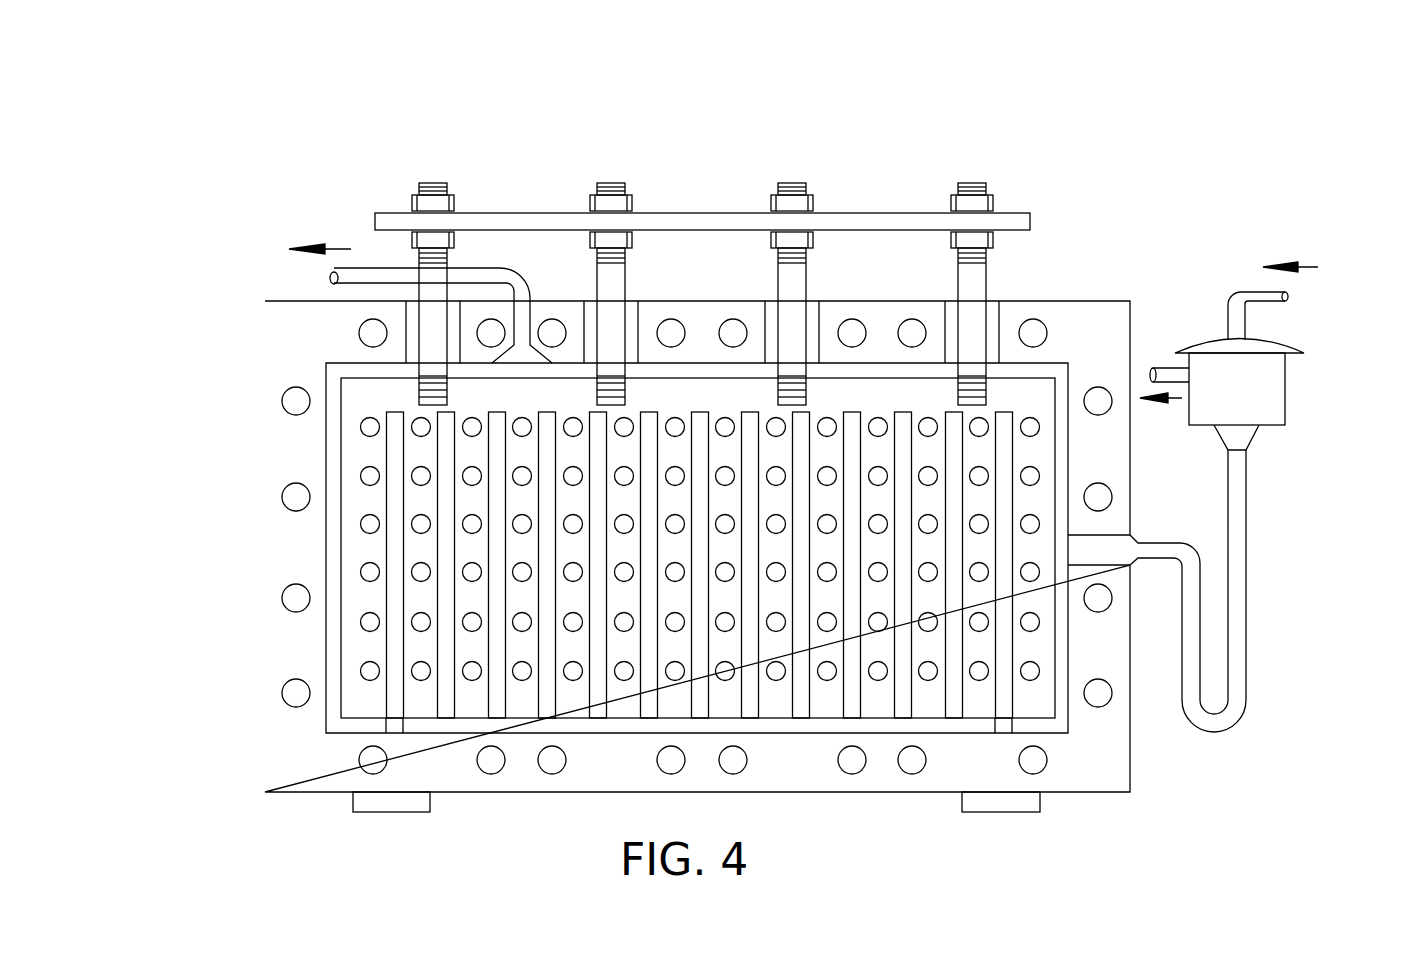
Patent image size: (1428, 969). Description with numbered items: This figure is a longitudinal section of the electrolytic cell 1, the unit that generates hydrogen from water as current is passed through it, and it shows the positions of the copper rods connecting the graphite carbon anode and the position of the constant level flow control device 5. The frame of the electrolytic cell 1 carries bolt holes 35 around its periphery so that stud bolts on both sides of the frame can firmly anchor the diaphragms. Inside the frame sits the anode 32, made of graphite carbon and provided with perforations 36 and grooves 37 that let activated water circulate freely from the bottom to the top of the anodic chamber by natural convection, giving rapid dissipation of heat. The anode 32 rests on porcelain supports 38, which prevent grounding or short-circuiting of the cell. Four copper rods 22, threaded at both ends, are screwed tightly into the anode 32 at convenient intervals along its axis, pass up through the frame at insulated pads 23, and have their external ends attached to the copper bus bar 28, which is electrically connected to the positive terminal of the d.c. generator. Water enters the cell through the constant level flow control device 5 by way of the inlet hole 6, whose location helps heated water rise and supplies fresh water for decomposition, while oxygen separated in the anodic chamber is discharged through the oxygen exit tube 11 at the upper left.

The electrolytic cell 1 is at (291, 343).
The constant level flow control device 5 is at (1285, 388).
The inlet hole 6 is at (1247, 498).
The oxygen exit tube 11 is at (373, 268).
The copper rods 22 is at (983, 285).
The insulating pad 23 is at (813, 313).
The copper bus bar 28 is at (683, 213).
The anode 32 is at (1033, 378).
The bolt holes 35 is at (289, 492).
The perforations 36 is at (1037, 633).
The grooves 37 is at (998, 697).
The porcelain supports 38 is at (990, 727).